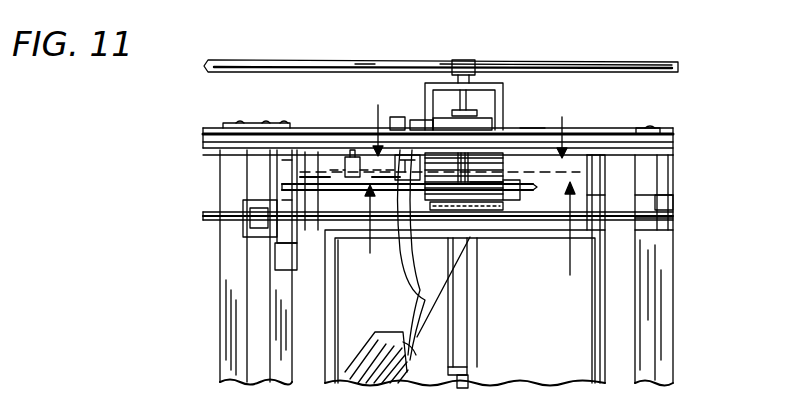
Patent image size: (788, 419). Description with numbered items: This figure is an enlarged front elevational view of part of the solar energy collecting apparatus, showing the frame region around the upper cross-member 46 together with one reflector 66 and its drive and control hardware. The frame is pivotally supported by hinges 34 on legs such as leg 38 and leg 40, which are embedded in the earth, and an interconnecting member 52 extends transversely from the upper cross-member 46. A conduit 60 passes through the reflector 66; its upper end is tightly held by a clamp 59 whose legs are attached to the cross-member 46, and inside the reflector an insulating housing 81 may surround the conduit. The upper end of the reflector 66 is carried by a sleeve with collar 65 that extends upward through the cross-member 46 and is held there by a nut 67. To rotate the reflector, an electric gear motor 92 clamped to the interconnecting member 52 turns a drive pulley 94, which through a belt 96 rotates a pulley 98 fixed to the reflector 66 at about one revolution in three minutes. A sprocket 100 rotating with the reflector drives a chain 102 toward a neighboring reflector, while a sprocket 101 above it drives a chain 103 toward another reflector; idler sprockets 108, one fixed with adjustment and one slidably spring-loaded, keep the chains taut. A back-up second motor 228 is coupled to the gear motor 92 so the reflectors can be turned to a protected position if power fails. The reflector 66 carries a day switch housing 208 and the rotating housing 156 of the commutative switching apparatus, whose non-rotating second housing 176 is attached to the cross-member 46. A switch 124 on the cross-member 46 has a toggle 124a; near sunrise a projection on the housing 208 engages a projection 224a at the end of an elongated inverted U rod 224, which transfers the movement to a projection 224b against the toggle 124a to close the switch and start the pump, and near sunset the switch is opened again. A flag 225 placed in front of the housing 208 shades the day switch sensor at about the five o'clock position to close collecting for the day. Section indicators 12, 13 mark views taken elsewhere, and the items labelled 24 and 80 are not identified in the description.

The top bar 24 is at (212, 75).
The switch 124 is at (367, 63).
The elongated inverted U rod 224 is at (523, 128).
The projection 224a is at (532, 155).
The projection 224b is at (368, 63).
The belt 96 is at (272, 124).
The upper cross-member 46 is at (203, 143).
The hinges 34 is at (240, 126).
The sleeve with collar 65 is at (476, 108).
The second housing 176 is at (448, 153).
The conduit 60 is at (470, 113).
The day switch housing 208 is at (494, 104).
The nut 67 is at (427, 126).
The clamp 59 is at (430, 120).
The flag 225 is at (343, 130).
The section line 12 is at (445, 138).
The section line 13 is at (465, 232).
The drive pulley 94 is at (282, 180).
The chain 102 is at (205, 214).
The pulley 98 is at (532, 210).
The sprocket 100 is at (485, 202).
The electric gear motor 92 is at (282, 262).
The second motor 228 is at (278, 268).
The idler sprockets 108 is at (262, 237).
The leg 38 is at (222, 298).
The interconnecting member 52 is at (258, 318).
The reflector 66 is at (562, 355).
The chain 103 is at (605, 202).
The insulating housing 81 is at (478, 340).
The hatched base 80 is at (385, 374).
The toggle 124a is at (412, 280).
The sprocket 101 is at (412, 293).
The rotating housing 156 is at (410, 333).
The leg 40 is at (655, 297).